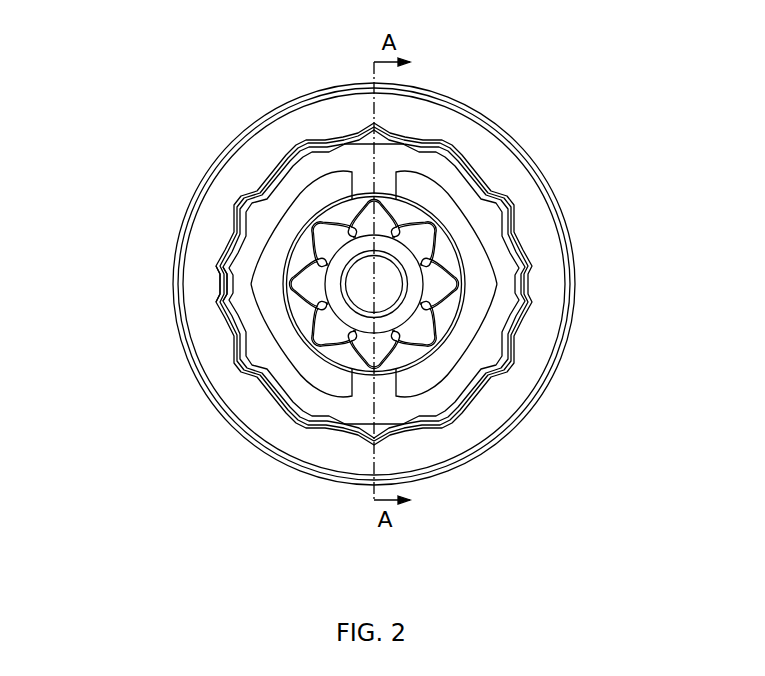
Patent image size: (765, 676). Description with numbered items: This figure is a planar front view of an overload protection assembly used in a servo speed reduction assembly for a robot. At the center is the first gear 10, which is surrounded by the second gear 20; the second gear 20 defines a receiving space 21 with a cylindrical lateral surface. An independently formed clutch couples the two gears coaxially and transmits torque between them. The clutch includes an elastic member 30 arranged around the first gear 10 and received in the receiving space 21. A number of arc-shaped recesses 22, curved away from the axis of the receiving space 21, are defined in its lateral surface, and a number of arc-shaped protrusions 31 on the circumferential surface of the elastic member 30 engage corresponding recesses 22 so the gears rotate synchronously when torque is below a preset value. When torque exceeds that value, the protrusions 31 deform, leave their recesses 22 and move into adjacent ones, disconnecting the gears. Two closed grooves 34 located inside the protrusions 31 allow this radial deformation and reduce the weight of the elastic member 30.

The first gear 10 is at (438, 268).
The second gear 20 is at (572, 247).
The receiving space 21 is at (240, 192).
The recesses 22 is at (216, 282).
The elastic member 30 is at (300, 176).
The protrusions 31 is at (221, 285).
The grooves 34 is at (284, 342).